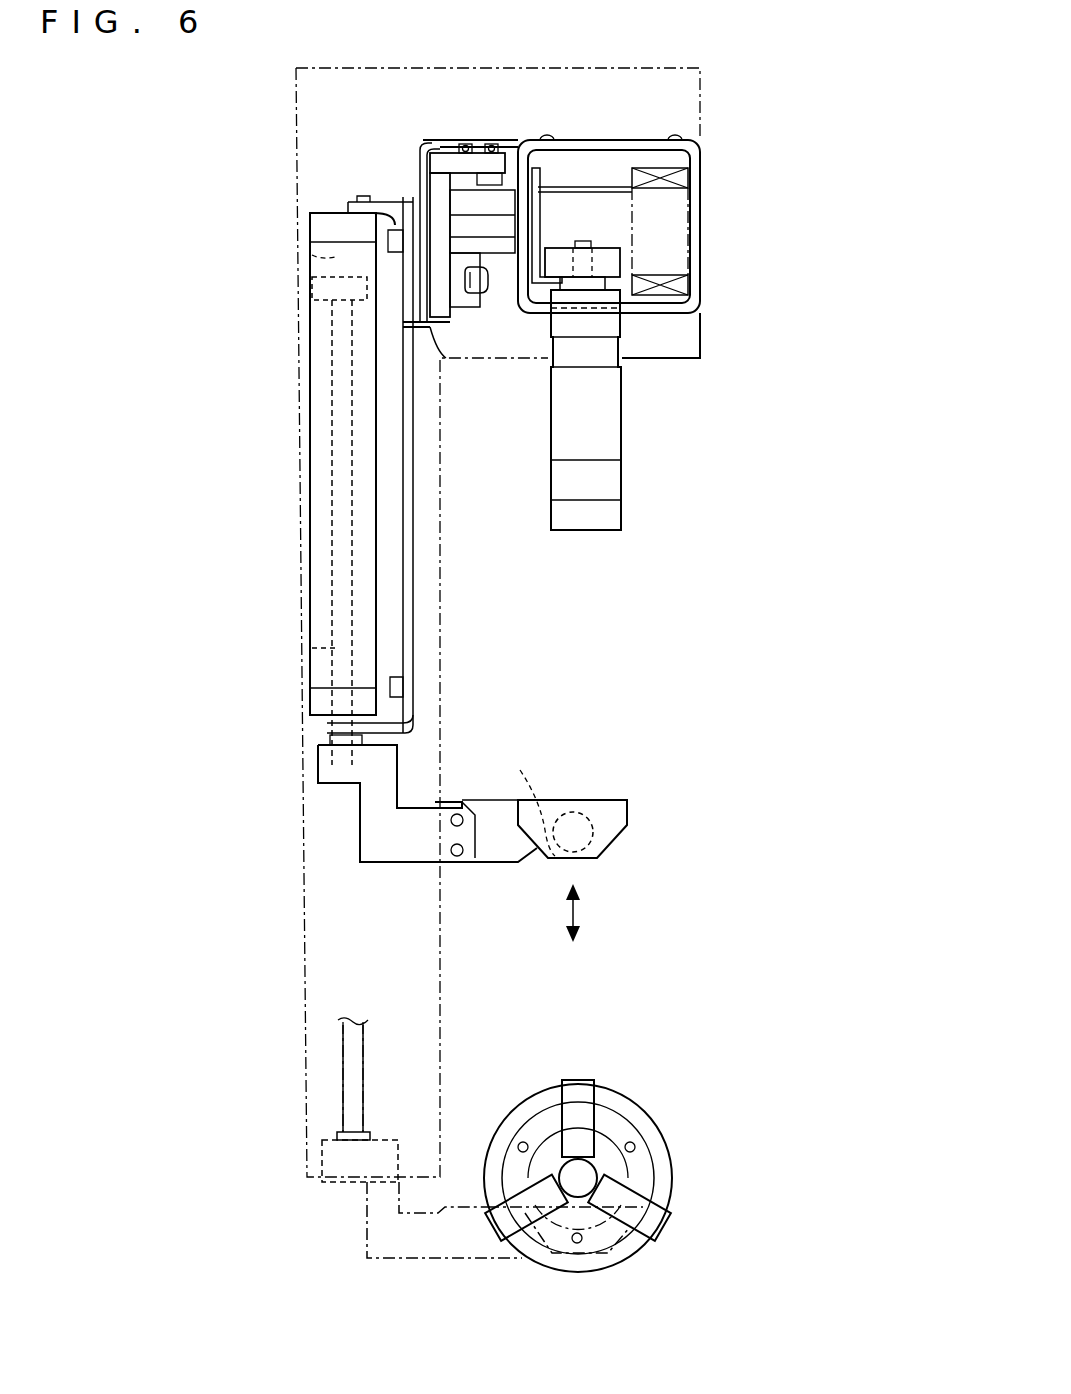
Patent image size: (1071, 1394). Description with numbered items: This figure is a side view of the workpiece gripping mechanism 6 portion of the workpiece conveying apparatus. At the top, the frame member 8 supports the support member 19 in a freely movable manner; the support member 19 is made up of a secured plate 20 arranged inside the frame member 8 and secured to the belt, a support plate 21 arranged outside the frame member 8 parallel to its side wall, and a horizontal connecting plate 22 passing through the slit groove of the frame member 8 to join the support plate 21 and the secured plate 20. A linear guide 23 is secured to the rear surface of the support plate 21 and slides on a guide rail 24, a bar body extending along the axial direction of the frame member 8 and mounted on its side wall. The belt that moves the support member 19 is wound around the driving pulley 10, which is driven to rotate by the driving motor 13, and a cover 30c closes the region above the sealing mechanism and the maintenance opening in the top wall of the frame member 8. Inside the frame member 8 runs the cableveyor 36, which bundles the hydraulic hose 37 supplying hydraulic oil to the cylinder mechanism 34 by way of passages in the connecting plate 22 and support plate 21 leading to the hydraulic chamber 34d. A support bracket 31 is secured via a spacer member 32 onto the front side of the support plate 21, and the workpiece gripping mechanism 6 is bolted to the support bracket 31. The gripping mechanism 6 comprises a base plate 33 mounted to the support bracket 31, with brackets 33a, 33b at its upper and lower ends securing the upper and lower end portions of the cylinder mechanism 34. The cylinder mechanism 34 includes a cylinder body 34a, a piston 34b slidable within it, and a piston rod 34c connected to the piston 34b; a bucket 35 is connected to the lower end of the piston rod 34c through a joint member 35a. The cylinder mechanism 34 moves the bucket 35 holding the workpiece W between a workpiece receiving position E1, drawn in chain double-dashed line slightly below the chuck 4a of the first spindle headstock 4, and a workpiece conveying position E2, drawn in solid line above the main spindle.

The first spindle headstock 4 is at (650, 1112).
The chuck 4a is at (588, 1080).
The workpiece gripping mechanism 6 is at (288, 367).
The frame member 8 is at (705, 216).
The driving pulley 10 is at (598, 247).
The driving motor 13 is at (443, 152).
The support member 19 is at (414, 157).
The secured plate 20 is at (528, 210).
The support plate 21 is at (452, 188).
The connecting plate 22 is at (467, 238).
The linear guide 23 is at (460, 309).
The guide rail 24 is at (488, 300).
The cover 30c is at (490, 141).
The support bracket 31 is at (405, 200).
The spacer member 32 is at (426, 330).
The base plate 33 is at (413, 430).
The bracket 33a is at (346, 204).
The bracket 33b is at (328, 728).
The cylinder mechanism 34 is at (308, 450).
The cylinder body 34a is at (314, 488).
The piston 34b is at (318, 283).
The piston rod 34c is at (318, 648).
The hydraulic chamber 34d is at (330, 256).
The bucket 35 is at (612, 800).
The joint member 35a is at (360, 830).
The cableveyor 36 is at (690, 170).
The hydraulic hose 37 is at (595, 190).
The workpiece W is at (562, 1163).
The workpiece receiving position E1 is at (690, 1186).
The workpiece conveying position E2 is at (632, 820).